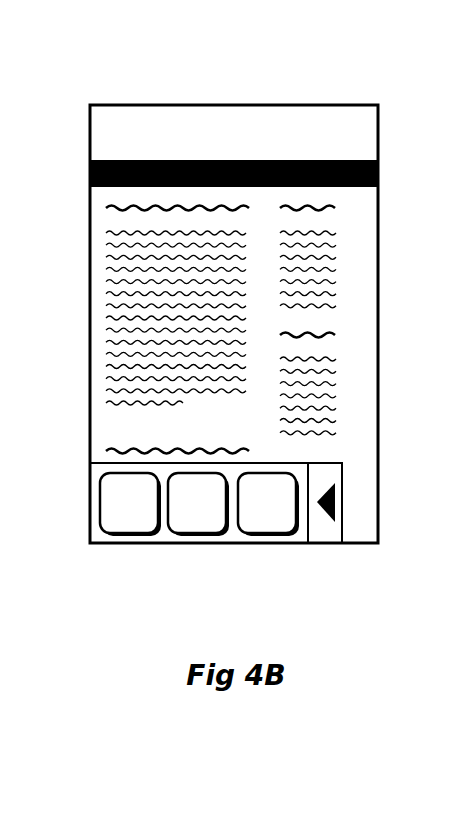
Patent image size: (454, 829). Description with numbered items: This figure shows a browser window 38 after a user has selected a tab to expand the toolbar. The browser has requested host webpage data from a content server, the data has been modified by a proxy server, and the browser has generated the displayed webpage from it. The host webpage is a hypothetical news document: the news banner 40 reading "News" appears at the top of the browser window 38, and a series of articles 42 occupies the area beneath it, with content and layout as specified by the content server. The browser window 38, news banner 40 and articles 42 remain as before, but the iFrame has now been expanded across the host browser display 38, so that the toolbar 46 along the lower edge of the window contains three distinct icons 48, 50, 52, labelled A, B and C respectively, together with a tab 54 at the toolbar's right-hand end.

The browser window 38 is at (343, 103).
The news banner 40 is at (133, 117).
The articles 42 is at (342, 393).
The toolbar 46 is at (171, 541).
The icon A 48 is at (130, 537).
The icon B 50 is at (200, 537).
The icon C 52 is at (270, 537).
The tab 54 is at (325, 545).